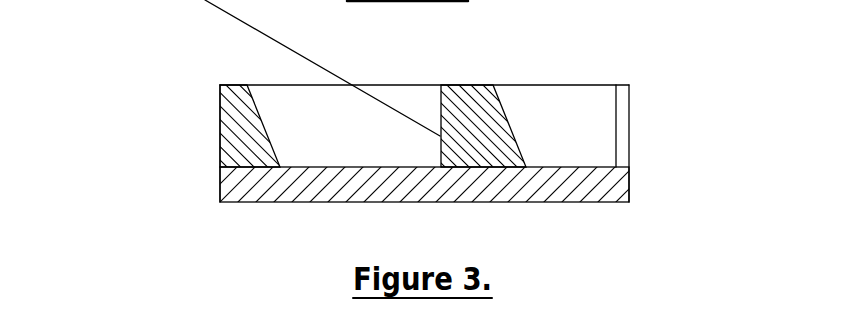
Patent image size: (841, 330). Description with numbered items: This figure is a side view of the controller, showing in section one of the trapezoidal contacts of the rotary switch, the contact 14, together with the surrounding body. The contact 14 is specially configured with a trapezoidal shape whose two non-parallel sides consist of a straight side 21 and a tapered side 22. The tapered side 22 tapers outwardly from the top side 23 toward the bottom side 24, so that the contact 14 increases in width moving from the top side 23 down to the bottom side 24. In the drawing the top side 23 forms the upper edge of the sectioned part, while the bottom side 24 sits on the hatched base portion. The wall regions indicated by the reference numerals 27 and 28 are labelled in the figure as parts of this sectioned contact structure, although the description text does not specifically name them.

The contact 14 is at (630, 152).
The straight side 21 is at (228, 86).
The tapered side 22 is at (520, 143).
The top side 23 is at (477, 85).
The bottom side 24 is at (482, 165).
The side wall 27 is at (220, 158).
The hatched wall section 28 is at (230, 132).